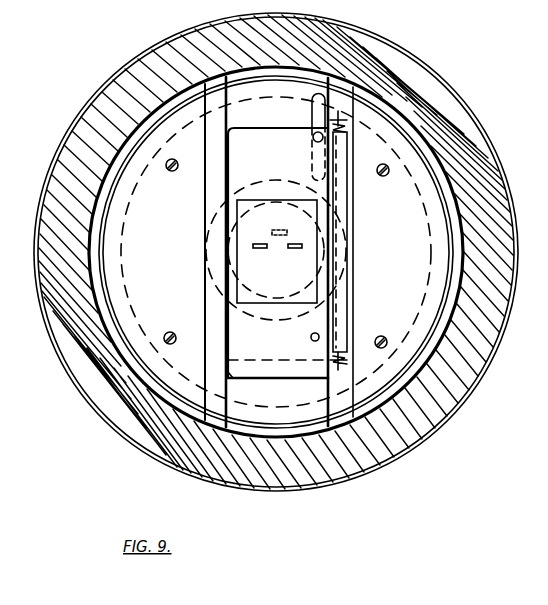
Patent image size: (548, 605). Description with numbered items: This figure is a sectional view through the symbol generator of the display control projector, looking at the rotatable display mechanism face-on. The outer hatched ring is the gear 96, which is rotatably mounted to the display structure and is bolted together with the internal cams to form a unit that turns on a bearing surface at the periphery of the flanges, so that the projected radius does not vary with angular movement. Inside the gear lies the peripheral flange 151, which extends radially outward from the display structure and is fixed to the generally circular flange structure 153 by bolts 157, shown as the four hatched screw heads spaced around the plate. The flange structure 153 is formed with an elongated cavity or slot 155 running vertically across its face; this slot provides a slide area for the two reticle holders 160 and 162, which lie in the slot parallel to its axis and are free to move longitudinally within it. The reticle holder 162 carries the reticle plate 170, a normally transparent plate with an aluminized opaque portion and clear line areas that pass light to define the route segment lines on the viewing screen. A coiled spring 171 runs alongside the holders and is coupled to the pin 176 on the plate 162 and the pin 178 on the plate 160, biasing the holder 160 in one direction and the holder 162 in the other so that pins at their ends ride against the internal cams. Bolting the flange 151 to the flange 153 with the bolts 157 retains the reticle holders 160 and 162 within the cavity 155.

The gear 96 is at (465, 102).
The peripheral flange 151 is at (245, 410).
The circular flange structure 153 is at (133, 163).
The elongated cavity or slot 155 is at (312, 392).
The bolts 157 is at (171, 171).
The reticle holder 160 is at (287, 365).
The reticle holder 162 is at (350, 117).
The reticle plate 170 is at (327, 203).
The coiled spring 171 is at (332, 293).
The pin 176 is at (314, 92).
The pin 178 is at (346, 362).